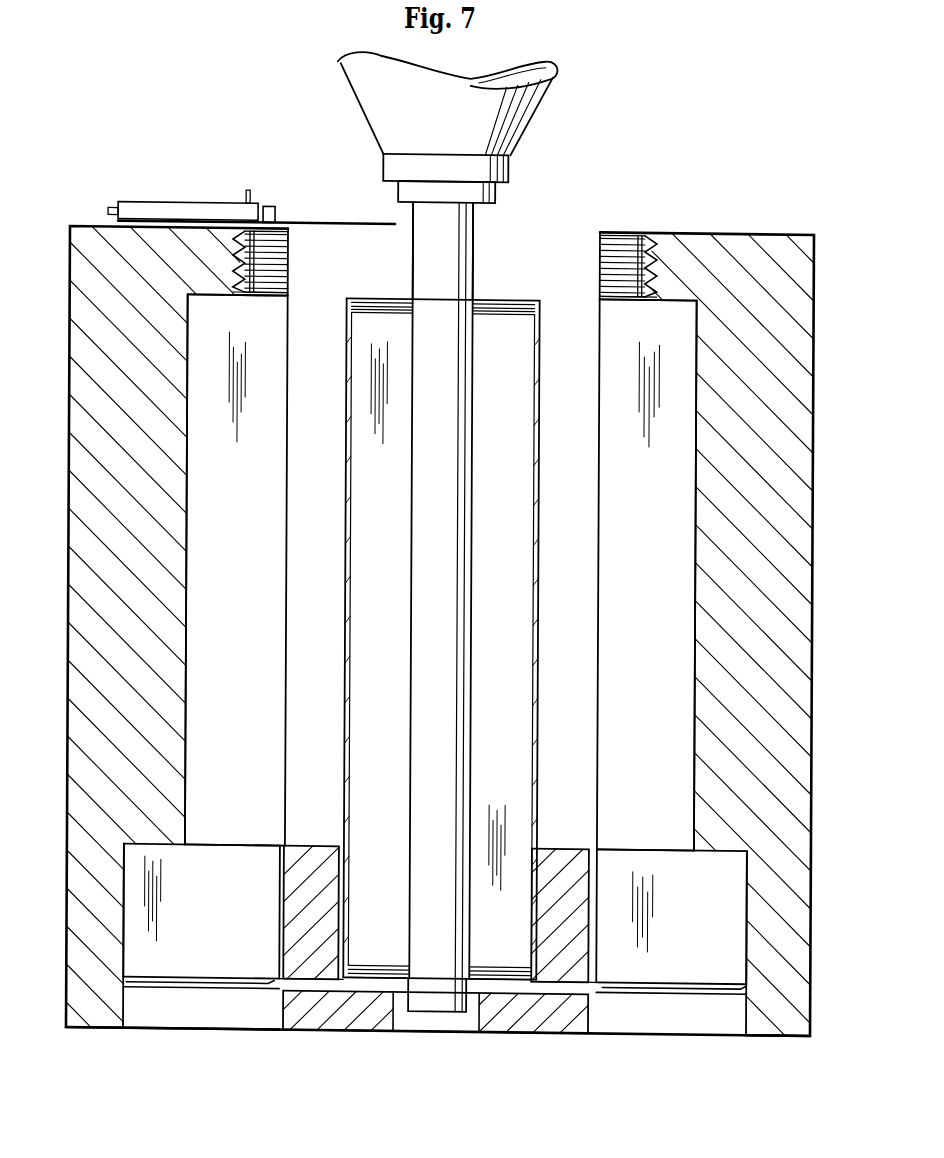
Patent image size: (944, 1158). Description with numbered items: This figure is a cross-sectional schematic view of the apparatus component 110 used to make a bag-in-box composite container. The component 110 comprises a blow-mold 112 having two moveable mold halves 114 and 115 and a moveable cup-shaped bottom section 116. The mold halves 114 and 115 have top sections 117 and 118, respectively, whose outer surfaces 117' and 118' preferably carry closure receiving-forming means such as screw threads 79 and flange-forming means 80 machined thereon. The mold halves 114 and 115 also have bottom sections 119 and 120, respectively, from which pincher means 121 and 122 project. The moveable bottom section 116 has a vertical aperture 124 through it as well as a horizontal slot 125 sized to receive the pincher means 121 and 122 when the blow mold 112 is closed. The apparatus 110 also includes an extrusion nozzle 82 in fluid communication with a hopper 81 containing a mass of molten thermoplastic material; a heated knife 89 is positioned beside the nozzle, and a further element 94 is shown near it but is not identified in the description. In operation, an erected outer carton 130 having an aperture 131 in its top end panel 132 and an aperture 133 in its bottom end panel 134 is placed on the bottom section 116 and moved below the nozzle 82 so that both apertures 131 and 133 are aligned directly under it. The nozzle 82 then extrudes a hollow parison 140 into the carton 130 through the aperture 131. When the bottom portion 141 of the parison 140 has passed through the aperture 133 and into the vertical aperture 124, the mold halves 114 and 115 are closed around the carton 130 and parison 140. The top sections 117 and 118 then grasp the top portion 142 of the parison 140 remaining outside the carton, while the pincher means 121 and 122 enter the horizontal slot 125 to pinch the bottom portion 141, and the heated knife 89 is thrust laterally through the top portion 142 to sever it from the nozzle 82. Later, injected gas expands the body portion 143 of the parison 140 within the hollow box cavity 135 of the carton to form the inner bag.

The screw threads 79 is at (240, 250).
The flange-forming means 80 is at (288, 296).
The hopper 81 is at (357, 72).
The extrusion nozzle 82 is at (406, 182).
The heated knife 89 is at (330, 218).
The handle cylinder 94 is at (192, 203).
The apparatus component 110 is at (630, 183).
The blow-mold 112 is at (185, 1061).
The moveable mold half 114 is at (175, 440).
The moveable mold half 115 is at (735, 432).
The moveable cup-shaped bottom section 116 is at (332, 1012).
The top section 117 is at (155, 228).
The outer surface 117' is at (302, 262).
The top section 118 is at (733, 250).
The outer surface 118' is at (586, 266).
The bottom section 119 is at (98, 962).
The bottom section 120 is at (786, 963).
The pincher means 121 is at (205, 976).
The pincher means 122 is at (645, 971).
The vertical aperture 124 is at (432, 1016).
The horizontal slot 125 is at (318, 980).
The outer carton 130 is at (347, 510).
The aperture 131 is at (480, 296).
The top end panel 132 is at (507, 291).
The aperture 133 is at (478, 975).
The bottom end panel 134 is at (510, 980).
The hollow box cavity 135 is at (505, 555).
The hollow parison 140 is at (452, 395).
The bottom portion 141 is at (435, 981).
The top portion 142 is at (445, 236).
The body portion 143 is at (447, 513).